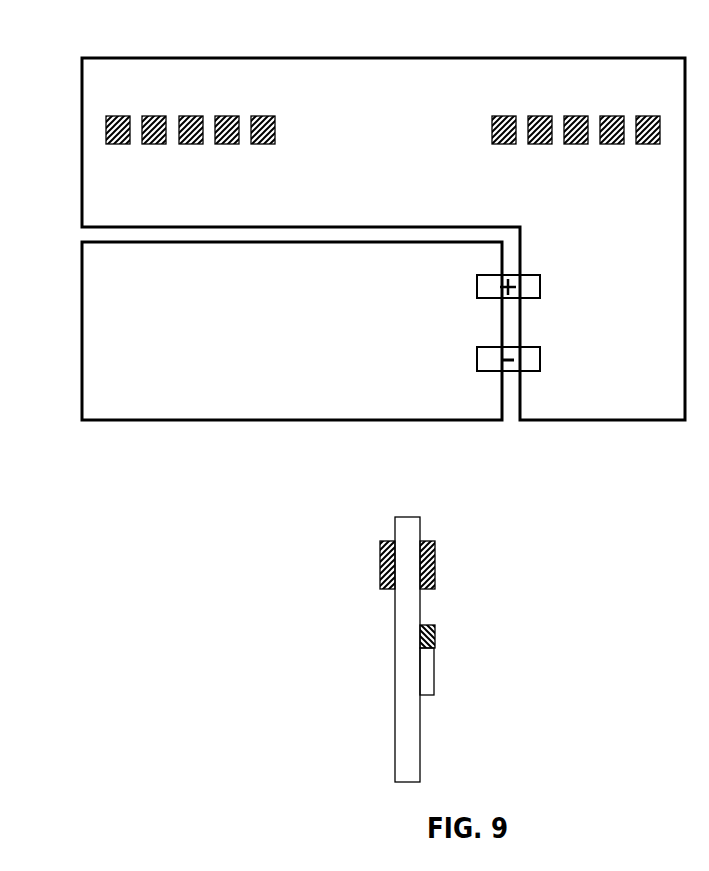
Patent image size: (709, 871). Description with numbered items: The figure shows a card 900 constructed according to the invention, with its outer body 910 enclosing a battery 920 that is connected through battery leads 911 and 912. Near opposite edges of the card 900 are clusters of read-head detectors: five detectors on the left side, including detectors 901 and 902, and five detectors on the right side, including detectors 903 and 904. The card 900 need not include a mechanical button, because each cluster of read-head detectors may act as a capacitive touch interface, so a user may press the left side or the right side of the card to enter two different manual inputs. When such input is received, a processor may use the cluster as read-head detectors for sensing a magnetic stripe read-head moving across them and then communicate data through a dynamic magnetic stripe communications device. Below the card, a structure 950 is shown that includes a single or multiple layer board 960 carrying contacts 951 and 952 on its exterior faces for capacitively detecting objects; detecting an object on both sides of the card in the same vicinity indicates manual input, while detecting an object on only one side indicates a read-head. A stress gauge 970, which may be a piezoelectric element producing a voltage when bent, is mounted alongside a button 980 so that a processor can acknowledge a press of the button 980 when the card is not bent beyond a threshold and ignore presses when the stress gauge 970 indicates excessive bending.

The card 900 is at (402, 31).
The housing / circuit board 910 is at (82, 66).
The battery 920 is at (82, 274).
The battery lead 911 is at (478, 286).
The battery lead 912 is at (478, 358).
The read-head detector 901 is at (108, 116).
The read-head detector 902 is at (168, 116).
The read-head detector 903 is at (596, 116).
The read-head detector 904 is at (661, 116).
The structure 950 is at (427, 501).
The contact 951 is at (387, 562).
The contact 952 is at (436, 548).
The single or multiple layer board 960 is at (422, 743).
The stress gauge 970 is at (436, 632).
The button 980 is at (436, 680).